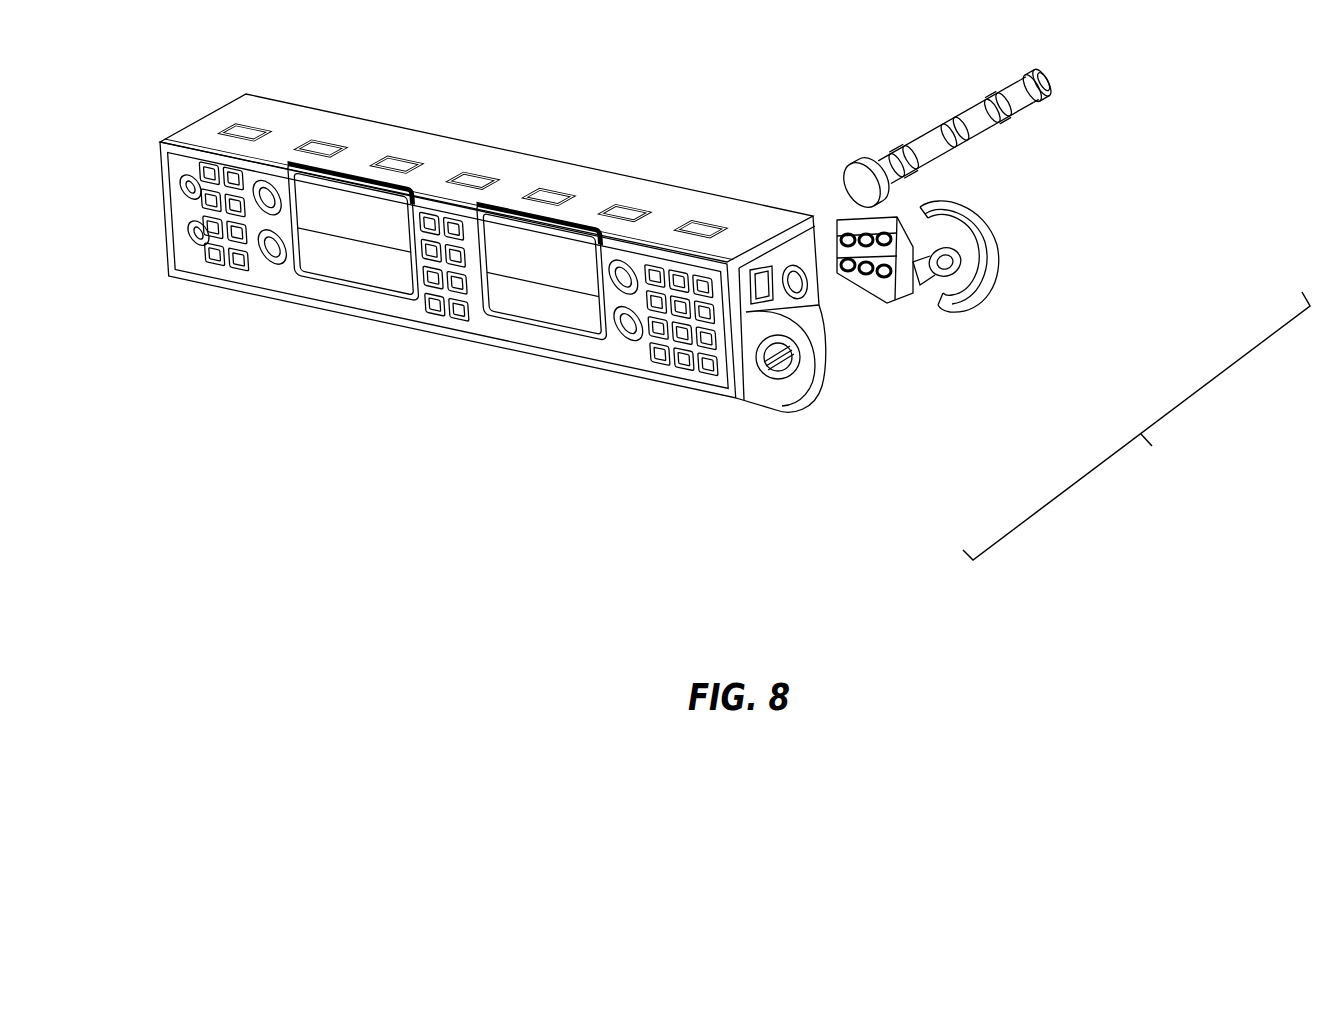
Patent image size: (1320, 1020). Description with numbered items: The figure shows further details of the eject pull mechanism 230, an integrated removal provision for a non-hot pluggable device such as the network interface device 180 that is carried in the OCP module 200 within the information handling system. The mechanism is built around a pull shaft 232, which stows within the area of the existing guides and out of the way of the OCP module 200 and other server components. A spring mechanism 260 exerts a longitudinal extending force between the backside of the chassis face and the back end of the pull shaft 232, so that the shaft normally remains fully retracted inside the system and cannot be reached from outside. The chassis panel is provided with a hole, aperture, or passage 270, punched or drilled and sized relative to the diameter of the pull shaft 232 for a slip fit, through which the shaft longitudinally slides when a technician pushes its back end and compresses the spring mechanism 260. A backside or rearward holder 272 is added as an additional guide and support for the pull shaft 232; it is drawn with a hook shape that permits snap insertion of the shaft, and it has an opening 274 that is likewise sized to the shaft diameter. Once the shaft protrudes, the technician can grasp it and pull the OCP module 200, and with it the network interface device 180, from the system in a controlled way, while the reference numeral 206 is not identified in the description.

The network interface device 180 is at (294, 310).
The OCP module 200 is at (445, 257).
The top face vent slots 206 is at (455, 260).
The eject pull mechanism 230 is at (1136, 426).
The pull shaft 232 is at (877, 136).
The spring mechanism 260 is at (1006, 122).
The hole, aperture, or passage 270 is at (763, 392).
The backside or rearward holder 272 is at (989, 295).
The opening 274 is at (939, 280).